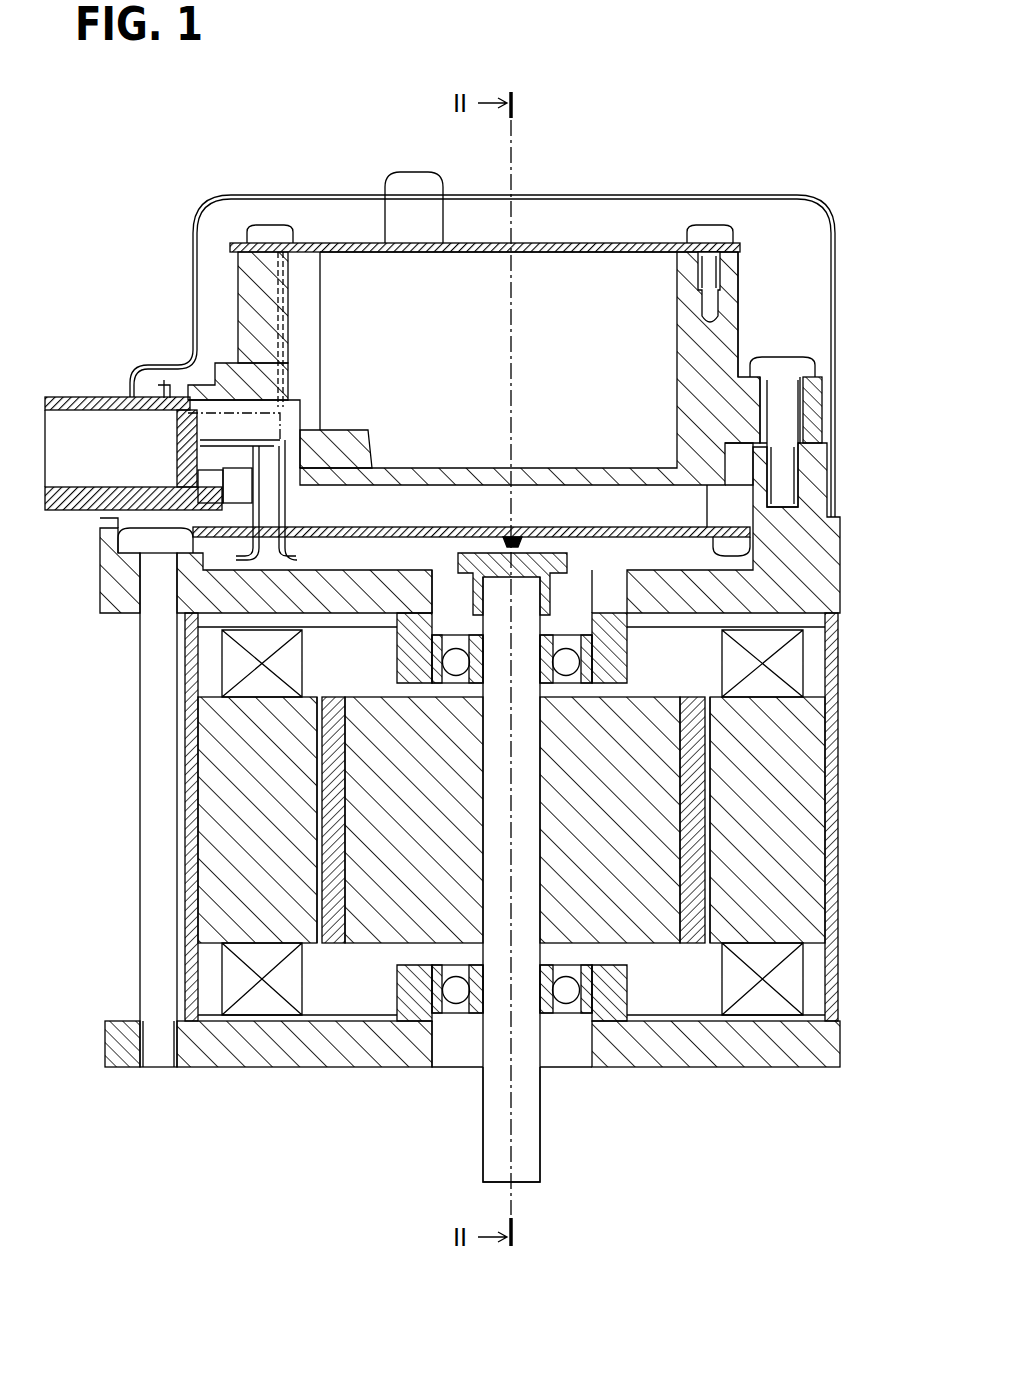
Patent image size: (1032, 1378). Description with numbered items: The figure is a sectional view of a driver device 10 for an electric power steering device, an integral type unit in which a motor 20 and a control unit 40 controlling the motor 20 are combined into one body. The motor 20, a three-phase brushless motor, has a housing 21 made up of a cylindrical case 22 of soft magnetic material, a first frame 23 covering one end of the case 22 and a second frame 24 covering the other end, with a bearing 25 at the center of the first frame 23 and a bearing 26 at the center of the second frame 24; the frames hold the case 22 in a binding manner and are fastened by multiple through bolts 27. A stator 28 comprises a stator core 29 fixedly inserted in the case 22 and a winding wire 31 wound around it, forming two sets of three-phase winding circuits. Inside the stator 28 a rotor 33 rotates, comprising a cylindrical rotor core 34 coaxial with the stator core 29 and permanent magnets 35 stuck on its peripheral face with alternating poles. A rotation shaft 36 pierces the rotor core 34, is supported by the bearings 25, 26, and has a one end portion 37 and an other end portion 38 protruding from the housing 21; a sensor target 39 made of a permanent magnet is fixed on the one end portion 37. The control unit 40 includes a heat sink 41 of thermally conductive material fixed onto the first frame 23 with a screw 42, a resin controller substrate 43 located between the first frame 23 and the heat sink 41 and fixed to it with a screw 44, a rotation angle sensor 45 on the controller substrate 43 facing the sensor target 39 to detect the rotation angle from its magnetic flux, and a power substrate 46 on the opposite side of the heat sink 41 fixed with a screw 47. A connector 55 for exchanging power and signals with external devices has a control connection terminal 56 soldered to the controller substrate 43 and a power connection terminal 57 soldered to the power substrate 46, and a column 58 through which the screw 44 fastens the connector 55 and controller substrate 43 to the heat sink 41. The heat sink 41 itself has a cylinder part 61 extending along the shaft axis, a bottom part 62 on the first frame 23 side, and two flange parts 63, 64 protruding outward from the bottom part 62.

The driver device 10 is at (190, 182).
The motor 20 is at (855, 763).
The housing 21 is at (857, 534).
The case 22 is at (830, 890).
The first frame 23 is at (810, 590).
The second frame 24 is at (832, 1040).
The bearing 25 is at (565, 662).
The bearing 26 is at (568, 995).
The through bolt 27 is at (157, 781).
The stator 28 is at (97, 915).
The stator core 29 is at (245, 892).
The winding wire 31 is at (233, 980).
The rotor 33 is at (391, 1134).
The rotor core 34 is at (385, 935).
The permanent magnet 35 is at (330, 950).
The rotation shaft 36 is at (527, 893).
The one end portion 37 is at (497, 622).
The other end portion 38 is at (530, 1152).
The sensor target 39 is at (525, 533).
The control unit 40 is at (848, 273).
The heat sink 41 is at (752, 260).
The screw 42 is at (805, 370).
The controller substrate 43 is at (755, 612).
The screw 44 is at (742, 546).
The rotation angle sensor 45 is at (690, 466).
The power substrate 46 is at (607, 247).
The screw 47 is at (267, 232).
The connector 55 is at (60, 397).
The control connection terminal 56 is at (217, 552).
The power connection terminal 57 is at (270, 292).
The column 58 is at (233, 488).
The cylinder part 61 is at (725, 331).
The bottom part 62 is at (447, 468).
The flange part 63 is at (190, 374).
The flange part 64 is at (815, 415).